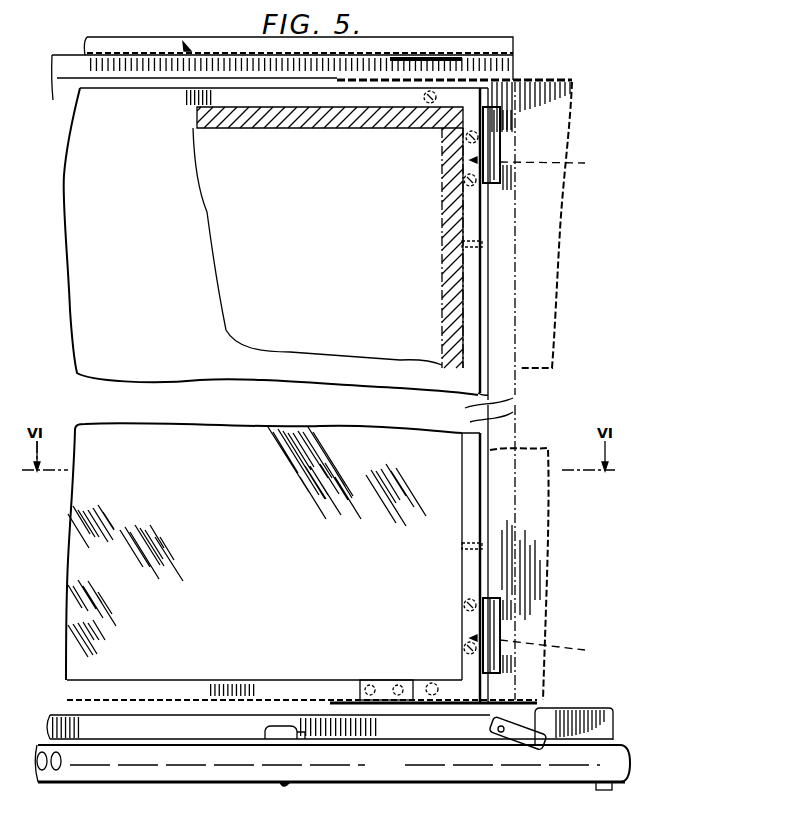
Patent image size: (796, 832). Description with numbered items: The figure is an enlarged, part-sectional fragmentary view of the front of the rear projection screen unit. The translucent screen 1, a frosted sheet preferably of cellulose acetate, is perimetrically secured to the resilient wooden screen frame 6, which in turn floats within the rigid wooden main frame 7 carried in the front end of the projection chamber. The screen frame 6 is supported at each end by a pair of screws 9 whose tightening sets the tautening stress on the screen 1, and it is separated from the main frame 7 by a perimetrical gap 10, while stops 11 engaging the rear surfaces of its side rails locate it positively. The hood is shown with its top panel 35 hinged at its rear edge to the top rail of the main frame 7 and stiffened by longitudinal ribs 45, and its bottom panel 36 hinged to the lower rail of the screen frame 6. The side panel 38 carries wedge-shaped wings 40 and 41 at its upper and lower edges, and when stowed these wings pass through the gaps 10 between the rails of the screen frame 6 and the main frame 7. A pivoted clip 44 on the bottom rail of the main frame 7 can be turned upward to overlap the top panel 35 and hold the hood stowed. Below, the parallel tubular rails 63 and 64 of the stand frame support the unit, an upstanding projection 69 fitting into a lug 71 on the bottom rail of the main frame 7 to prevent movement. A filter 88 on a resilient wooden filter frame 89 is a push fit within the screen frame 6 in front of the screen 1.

The translucent screen 1 is at (98, 487).
The screen frame 6 is at (314, 692).
The main frame 7 is at (452, 730).
The screws 9 is at (535, 409).
The perimetrical gap 10 is at (193, 706).
The stops 11 is at (487, 545).
The top panel 35 is at (185, 46).
The bottom panel 36 is at (276, 697).
The side panel 38 is at (528, 612).
The wing 40 is at (543, 66).
The wing 41 is at (528, 701).
The pivoted clips 44 is at (508, 742).
The longitudinal ribs 45 is at (515, 42).
The parallel rail 63 is at (48, 786).
The parallel rail 64 is at (90, 773).
The upstanding projection 69 is at (269, 730).
The lug 71 is at (306, 741).
The filter 88 is at (216, 270).
The filter frame 89 is at (460, 228).